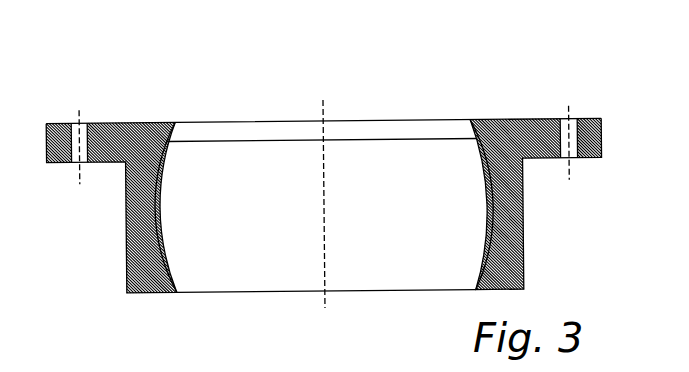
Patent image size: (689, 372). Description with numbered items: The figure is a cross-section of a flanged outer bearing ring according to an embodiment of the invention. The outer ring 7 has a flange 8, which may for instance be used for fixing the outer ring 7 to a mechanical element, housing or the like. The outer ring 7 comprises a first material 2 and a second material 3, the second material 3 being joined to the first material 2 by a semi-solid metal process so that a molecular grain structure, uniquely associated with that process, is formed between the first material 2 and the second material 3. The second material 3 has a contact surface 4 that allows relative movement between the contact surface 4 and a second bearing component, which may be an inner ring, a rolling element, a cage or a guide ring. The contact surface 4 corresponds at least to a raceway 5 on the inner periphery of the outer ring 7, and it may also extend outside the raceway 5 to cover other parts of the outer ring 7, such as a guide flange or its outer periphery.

The outer ring 7 is at (110, 90).
The first material 2 is at (508, 182).
The flange 8 is at (604, 133).
The second material 3 is at (470, 156).
The contact surface 4 is at (490, 207).
The raceway 5 is at (482, 258).